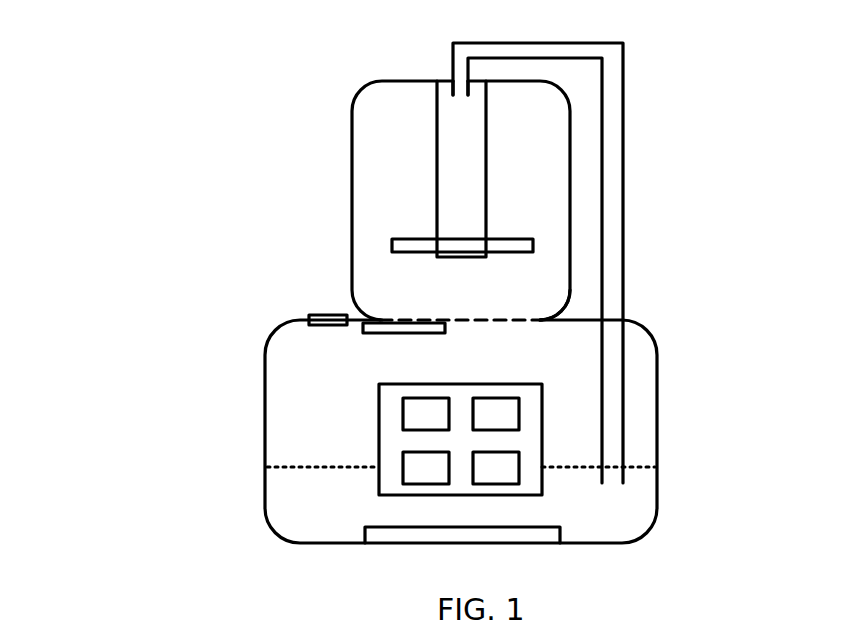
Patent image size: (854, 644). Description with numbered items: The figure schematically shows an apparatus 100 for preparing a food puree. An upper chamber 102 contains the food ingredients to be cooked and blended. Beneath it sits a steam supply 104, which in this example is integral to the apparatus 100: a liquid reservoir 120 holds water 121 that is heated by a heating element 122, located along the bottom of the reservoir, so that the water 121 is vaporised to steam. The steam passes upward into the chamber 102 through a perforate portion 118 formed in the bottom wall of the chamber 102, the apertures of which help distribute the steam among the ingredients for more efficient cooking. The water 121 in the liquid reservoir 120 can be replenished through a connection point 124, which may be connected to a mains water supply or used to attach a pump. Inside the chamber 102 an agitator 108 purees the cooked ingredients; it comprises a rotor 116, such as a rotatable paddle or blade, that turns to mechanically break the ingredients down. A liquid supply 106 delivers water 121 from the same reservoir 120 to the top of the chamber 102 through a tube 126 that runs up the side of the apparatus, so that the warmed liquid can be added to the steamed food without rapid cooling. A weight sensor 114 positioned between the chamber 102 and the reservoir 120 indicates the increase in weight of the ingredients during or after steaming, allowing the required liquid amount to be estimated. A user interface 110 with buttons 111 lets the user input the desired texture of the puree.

The apparatus 100 is at (131, 88).
The chamber 102 is at (572, 213).
The steam supply 104 is at (440, 318).
The liquid supply 106 is at (458, 90).
The agitator 108 is at (465, 178).
The user interface 110 is at (525, 485).
The buttons 111 is at (418, 468).
The weight sensor 114 is at (445, 328).
The rotor 116 is at (392, 248).
The perforate portion 118 is at (505, 318).
The liquid reservoir 120 is at (657, 403).
The water 121 is at (283, 503).
The heating element 122 is at (380, 537).
The connection point 124 is at (325, 320).
The tube 126 is at (612, 67).